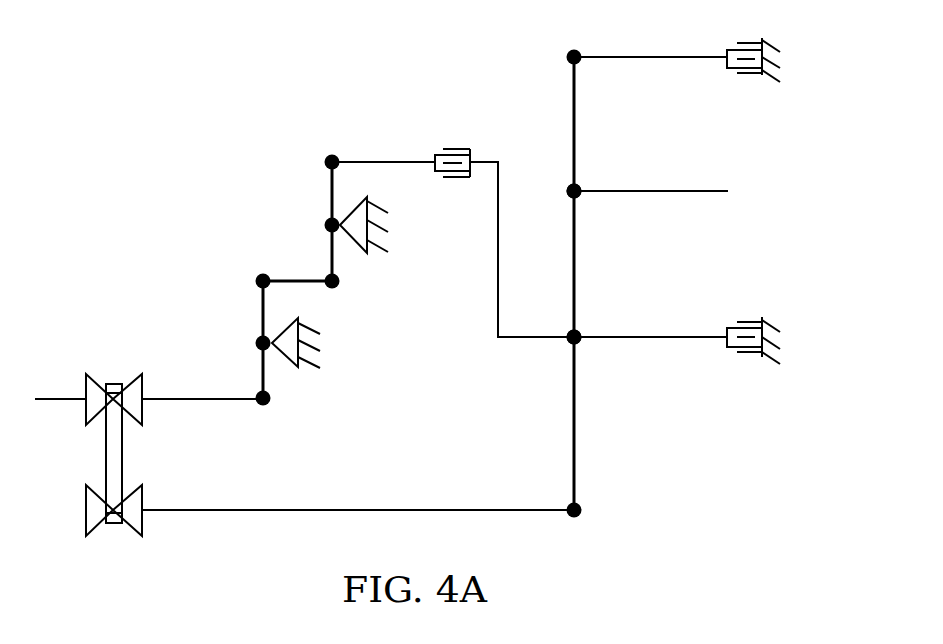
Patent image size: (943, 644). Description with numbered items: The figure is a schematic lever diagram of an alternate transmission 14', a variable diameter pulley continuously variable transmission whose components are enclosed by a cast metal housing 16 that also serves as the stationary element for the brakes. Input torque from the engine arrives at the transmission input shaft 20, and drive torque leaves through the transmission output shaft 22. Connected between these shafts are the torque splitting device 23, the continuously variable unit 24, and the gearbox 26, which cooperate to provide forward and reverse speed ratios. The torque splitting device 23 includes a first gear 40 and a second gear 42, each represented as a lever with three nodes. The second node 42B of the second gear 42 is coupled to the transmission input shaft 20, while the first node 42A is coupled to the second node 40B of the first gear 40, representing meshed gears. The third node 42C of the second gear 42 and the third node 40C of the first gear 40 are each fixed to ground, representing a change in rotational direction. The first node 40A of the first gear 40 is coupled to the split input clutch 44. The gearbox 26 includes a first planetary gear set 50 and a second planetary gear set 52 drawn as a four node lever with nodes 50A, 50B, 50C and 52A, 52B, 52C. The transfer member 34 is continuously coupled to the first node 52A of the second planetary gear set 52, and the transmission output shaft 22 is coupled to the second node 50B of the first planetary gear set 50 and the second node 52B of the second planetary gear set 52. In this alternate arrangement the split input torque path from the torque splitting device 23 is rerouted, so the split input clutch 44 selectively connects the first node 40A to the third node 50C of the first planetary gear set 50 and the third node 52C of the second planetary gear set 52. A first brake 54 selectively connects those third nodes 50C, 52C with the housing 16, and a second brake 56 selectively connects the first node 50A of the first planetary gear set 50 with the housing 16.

The alternate transmission 14' is at (719, 73).
The transmission housing 16 is at (780, 50).
The transmission input shaft 20 is at (45, 401).
The transmission output shaft 22 is at (722, 193).
The torque splitting device 23 is at (230, 184).
The continuously variable unit 24 is at (98, 548).
The gearbox 26 is at (612, 48).
The transfer member 34 is at (330, 508).
The first gear 40 is at (306, 162).
The first node of the first gear 40A is at (337, 160).
The second node of the first gear 40B is at (335, 284).
The third node of the first gear 40C is at (330, 225).
The second gear 42 is at (218, 302).
The first node of the second gear 42A is at (262, 278).
The second node of the second gear 42B is at (262, 402).
The third node of the second gear 42C is at (262, 344).
The split input clutch 44 is at (462, 148).
The first planetary gear set 50 is at (555, 70).
The first node of the first planetary gear set 50A is at (578, 62).
The second node of the first planetary gear set 50B is at (578, 195).
The third node of the first planetary gear set 50C is at (580, 332).
The second planetary gear set 52 is at (595, 458).
The first node of the second planetary gear set 52A is at (585, 512).
The second node of the second planetary gear set 52B is at (574, 191).
The third node of the second planetary gear set 52C is at (574, 337).
The first brake 54 is at (750, 352).
The second brake 56 is at (750, 73).